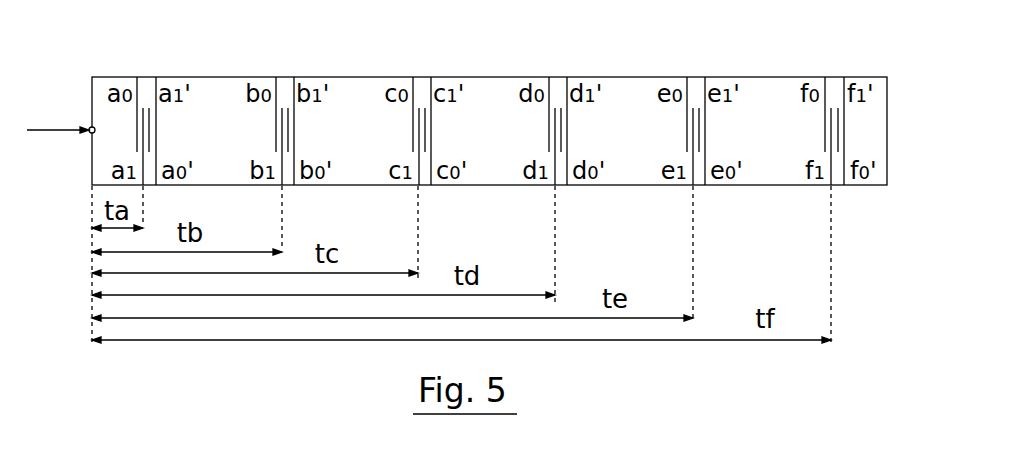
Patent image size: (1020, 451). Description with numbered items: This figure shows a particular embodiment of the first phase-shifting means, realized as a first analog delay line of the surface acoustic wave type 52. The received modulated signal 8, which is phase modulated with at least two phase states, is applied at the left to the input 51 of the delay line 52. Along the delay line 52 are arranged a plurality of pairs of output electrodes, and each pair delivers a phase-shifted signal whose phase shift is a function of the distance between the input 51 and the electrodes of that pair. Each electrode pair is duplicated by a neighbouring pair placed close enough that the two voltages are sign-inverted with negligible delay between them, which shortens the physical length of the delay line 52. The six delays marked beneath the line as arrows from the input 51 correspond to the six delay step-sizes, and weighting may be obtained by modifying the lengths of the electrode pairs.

The received modulated signal 8 is at (58, 131).
The input 51 is at (90, 127).
The first analog delay line of the surface acoustic wave type 52 is at (855, 77).